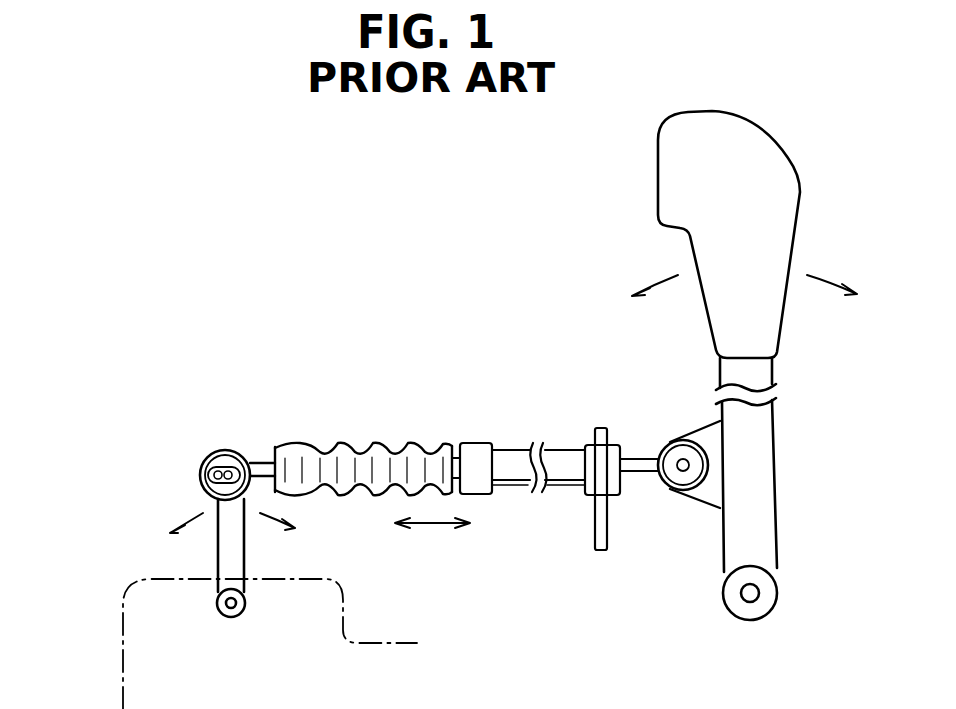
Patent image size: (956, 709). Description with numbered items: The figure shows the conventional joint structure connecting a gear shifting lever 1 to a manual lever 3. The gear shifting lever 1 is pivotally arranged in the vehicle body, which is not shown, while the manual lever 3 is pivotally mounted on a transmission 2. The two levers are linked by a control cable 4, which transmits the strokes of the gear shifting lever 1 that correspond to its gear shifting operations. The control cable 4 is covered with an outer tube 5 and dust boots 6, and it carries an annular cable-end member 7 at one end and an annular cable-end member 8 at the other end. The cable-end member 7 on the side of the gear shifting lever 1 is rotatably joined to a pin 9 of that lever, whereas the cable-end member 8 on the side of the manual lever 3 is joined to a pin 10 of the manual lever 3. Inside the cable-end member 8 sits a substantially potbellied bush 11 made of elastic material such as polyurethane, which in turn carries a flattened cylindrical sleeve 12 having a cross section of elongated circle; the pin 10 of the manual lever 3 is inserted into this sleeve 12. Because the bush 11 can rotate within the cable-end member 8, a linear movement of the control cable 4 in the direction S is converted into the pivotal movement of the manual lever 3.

The gear shifting lever 1 is at (777, 413).
The transmission 2 is at (123, 632).
The manual lever 3 is at (218, 555).
The control cable 4 is at (259, 462).
The outer tube 5 is at (513, 450).
The dust boots 6 is at (381, 445).
The cable-end member 7 is at (663, 492).
The cable-end member 8 is at (205, 498).
The pin 9 is at (681, 462).
The pin 10 is at (223, 472).
The bush 11 is at (218, 486).
The sleeve 12 is at (216, 470).
The direction S is at (431, 524).